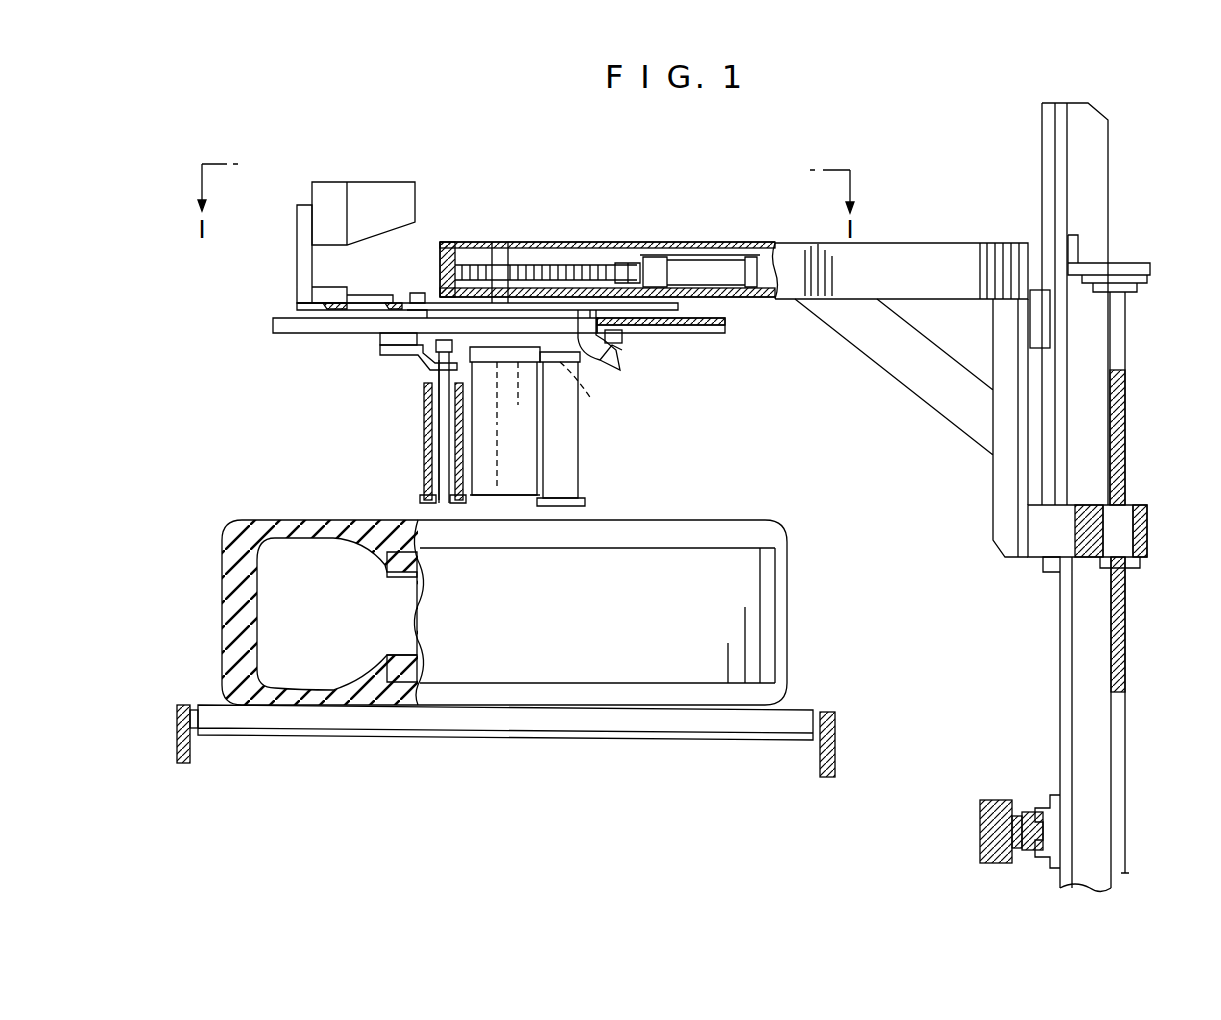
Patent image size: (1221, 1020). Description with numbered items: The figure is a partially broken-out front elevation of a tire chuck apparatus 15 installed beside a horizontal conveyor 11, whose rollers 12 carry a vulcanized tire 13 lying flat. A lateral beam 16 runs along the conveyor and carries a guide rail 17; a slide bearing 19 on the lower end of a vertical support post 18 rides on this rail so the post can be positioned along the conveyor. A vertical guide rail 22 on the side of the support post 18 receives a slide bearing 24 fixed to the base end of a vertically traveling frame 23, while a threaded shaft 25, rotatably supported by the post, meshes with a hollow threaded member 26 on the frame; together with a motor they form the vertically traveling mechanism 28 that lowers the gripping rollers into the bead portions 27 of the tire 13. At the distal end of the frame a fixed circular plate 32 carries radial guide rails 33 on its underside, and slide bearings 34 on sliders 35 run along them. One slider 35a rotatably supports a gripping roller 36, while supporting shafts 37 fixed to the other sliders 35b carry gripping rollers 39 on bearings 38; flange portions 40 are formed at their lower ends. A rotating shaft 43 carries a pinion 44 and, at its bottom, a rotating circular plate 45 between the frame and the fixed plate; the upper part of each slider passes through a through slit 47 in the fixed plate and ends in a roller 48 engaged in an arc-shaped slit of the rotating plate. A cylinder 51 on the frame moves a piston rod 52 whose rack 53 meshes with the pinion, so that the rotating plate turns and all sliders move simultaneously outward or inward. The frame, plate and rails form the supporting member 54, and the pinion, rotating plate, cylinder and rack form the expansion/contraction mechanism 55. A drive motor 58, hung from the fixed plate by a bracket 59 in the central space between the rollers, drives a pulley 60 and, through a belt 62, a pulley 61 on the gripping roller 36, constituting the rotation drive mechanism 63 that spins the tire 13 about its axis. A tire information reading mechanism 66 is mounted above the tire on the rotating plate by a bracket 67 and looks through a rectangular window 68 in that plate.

The horizontal conveyor 11 is at (809, 700).
The rollers 12 is at (770, 730).
The vulcanized tire 13 is at (771, 522).
The tire chuck apparatus 15 is at (870, 212).
The lateral beam 16 is at (993, 800).
The guide rail 17 is at (1037, 810).
The support post 18 is at (1078, 667).
The slide bearing 19 is at (1046, 855).
The guide rail 22 is at (1040, 172).
The vertically traveling frame 23 is at (936, 258).
The slide bearing 24 is at (1029, 316).
The threaded shaft 25 is at (1122, 340).
The hollow threaded member 26 is at (1124, 516).
The bead portions 27 is at (372, 568).
The vertically traveling mechanism 28 is at (1133, 250).
The fixed circular plate 32 is at (277, 334).
The guide rails 33 is at (712, 334).
The slide bearing 34 is at (386, 340).
The sliders 35 is at (582, 348).
The slider 35a is at (614, 354).
The sliders 35b is at (405, 350).
The gripping roller 36 is at (570, 450).
The supporting shafts 37 is at (440, 443).
The bearings 38 is at (422, 495).
The gripping rollers 39 is at (425, 468).
The flange portions 40 is at (592, 500).
The rotating shaft 43 is at (505, 240).
The pinion 44 is at (470, 263).
The rotating circular plate 45 is at (702, 306).
The through slits 47 is at (623, 340).
The rollers 48 is at (417, 296).
The cylinder 51 is at (706, 268).
The piston rod 52 is at (638, 264).
The rack 53 is at (590, 265).
The supporting member 54 is at (698, 222).
The expansion/contraction mechanism 55 is at (497, 220).
The drive motor 58 is at (497, 488).
The bracket 59 is at (440, 350).
The pulley 60 is at (500, 372).
The pulley 61 is at (588, 398).
The belt 62 is at (518, 388).
The rotation drive mechanism 63 is at (518, 500).
The tire information reading mechanism 66 is at (363, 193).
The bracket 67 is at (304, 272).
The window 68 is at (392, 300).